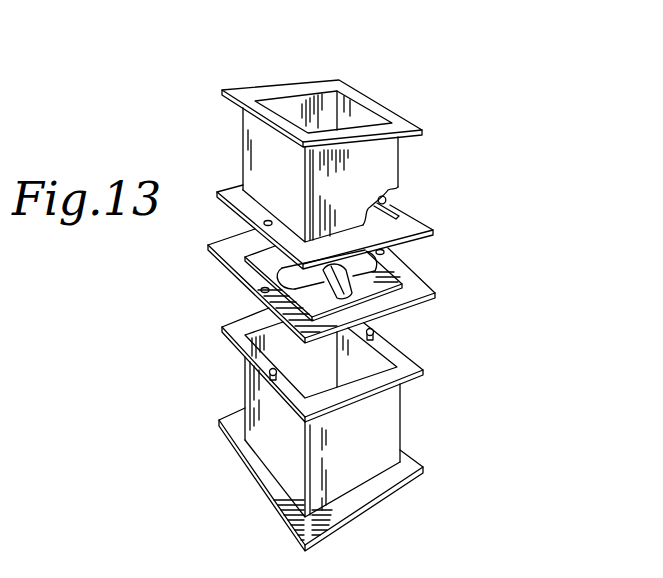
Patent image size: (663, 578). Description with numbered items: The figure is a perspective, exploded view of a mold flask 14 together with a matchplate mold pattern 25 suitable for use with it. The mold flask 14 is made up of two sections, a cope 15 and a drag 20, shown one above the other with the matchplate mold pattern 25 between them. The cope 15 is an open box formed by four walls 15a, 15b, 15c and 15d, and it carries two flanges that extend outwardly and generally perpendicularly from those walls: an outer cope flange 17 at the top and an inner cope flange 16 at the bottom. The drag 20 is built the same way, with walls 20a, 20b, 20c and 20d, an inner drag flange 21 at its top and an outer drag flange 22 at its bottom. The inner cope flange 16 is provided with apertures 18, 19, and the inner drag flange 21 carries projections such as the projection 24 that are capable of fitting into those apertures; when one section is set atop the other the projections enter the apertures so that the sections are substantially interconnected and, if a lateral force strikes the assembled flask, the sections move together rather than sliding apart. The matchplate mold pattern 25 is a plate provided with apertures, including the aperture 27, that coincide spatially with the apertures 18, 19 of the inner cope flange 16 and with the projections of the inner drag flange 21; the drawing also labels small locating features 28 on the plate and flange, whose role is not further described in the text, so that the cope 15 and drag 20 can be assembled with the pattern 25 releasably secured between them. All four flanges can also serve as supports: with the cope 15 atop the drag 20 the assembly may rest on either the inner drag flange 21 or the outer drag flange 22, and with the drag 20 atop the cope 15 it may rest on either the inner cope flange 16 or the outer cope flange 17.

The mold flask 14 is at (180, 325).
The cope section 15 is at (338, 181).
The wall 15a is at (380, 173).
The wall 15b is at (253, 155).
The wall 15c is at (308, 102).
The wall 15d is at (357, 117).
The inner cope flange 16 is at (428, 228).
The outer cope flange 17 is at (262, 90).
The aperture 18 is at (388, 198).
The aperture 19 is at (262, 223).
The drag section 20 is at (357, 445).
The wall 20a is at (387, 428).
The wall 20b is at (282, 462).
The wall 20c is at (278, 352).
The wall 20d is at (373, 357).
The inner drag flange 21 is at (424, 370).
The outer drag flange 22 is at (303, 547).
The projection 24 is at (270, 374).
The matchplate mold pattern 25 is at (335, 286).
The aperture 27 is at (260, 290).
The locating pins 28 is at (385, 253).